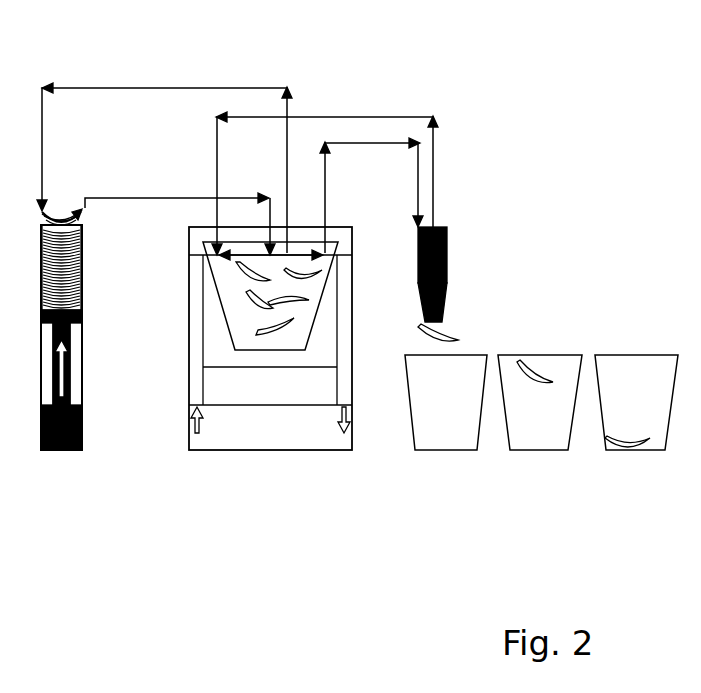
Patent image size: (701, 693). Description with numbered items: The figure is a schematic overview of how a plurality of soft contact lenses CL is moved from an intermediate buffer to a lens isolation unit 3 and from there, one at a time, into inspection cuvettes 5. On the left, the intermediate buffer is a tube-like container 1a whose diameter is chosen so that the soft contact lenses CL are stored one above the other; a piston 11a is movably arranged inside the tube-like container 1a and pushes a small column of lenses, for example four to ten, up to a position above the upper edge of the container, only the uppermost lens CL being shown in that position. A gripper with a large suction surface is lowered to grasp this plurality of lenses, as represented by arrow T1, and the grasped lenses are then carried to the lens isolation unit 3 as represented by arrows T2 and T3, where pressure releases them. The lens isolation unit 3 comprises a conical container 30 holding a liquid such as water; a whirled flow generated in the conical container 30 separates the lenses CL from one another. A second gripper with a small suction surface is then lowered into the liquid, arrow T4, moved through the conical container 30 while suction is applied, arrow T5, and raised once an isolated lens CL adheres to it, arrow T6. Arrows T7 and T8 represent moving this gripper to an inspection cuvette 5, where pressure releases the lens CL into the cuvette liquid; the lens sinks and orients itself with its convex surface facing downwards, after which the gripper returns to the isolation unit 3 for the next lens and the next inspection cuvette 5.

The tube-like container 1a is at (82, 388).
The piston 11a is at (82, 317).
The lens isolation unit 3 is at (214, 460).
The conical container 30 is at (315, 325).
The inspection cuvette 5 is at (412, 418).
The soft contact lens CL is at (292, 318).
The arrow T1 is at (42, 137).
The arrow T2 is at (131, 198).
The arrow T3 is at (272, 216).
The arrow T4 is at (215, 158).
The arrow T5 is at (250, 262).
The arrow T6 is at (327, 184).
The arrow T7 is at (360, 143).
The arrow T8 is at (418, 182).